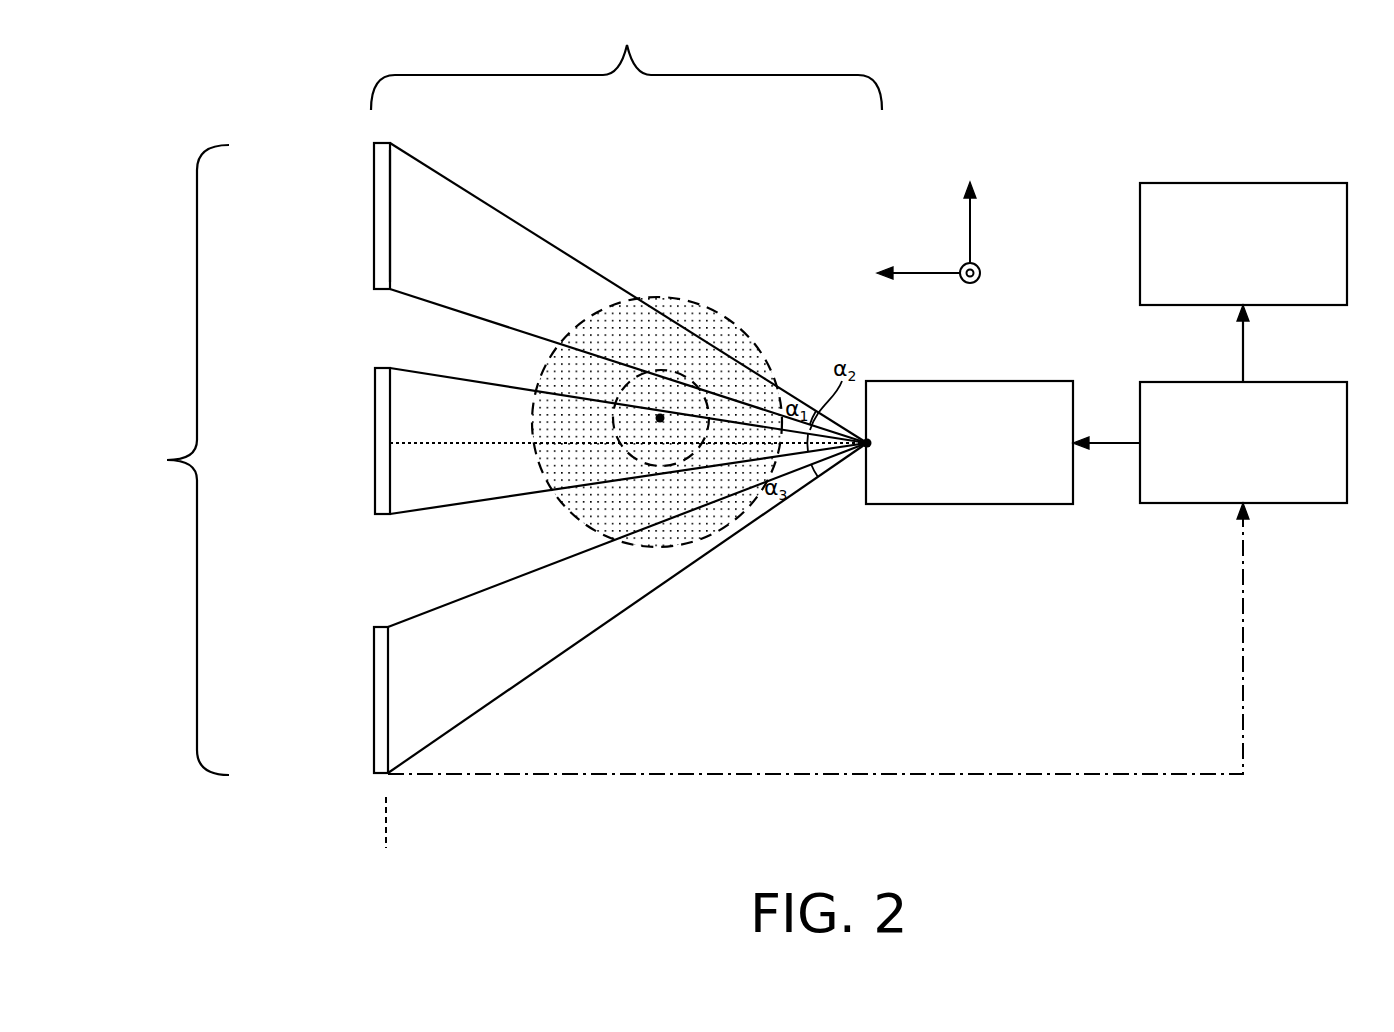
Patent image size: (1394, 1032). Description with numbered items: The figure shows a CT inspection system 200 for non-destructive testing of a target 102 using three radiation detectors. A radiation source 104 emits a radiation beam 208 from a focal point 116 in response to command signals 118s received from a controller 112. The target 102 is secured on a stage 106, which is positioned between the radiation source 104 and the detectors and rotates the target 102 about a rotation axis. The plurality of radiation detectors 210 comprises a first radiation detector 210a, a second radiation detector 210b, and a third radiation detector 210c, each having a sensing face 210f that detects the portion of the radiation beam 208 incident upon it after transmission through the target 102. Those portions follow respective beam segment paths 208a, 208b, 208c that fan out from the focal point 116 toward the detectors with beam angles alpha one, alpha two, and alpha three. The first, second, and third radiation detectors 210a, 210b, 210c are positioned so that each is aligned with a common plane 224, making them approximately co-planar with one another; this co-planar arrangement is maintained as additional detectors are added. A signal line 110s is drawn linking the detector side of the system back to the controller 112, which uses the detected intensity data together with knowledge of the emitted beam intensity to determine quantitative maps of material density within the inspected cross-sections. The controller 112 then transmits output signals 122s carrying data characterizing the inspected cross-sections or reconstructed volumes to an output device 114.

The CT inspection system 200 is at (1098, 160).
The radiation beam 208 is at (626, 63).
The first beam segment path 208a is at (628, 293).
The second beam segment path 208b is at (628, 441).
The third beam segment path 208c is at (627, 608).
The plurality of radiation detectors 210 is at (175, 460).
The first radiation detector 210a is at (374, 216).
The second radiation detector 210b is at (375, 445).
The third radiation detector 210c is at (374, 691).
The sensing face 210f is at (392, 173).
The target 102 is at (561, 506).
The stage 106 is at (615, 404).
The focal point 116 is at (868, 444).
The radiation source 104 is at (969, 442).
The controller 112 is at (1243, 442).
The output device 114 is at (1243, 244).
The command signals 118s is at (1108, 442).
The output signals 122s is at (1244, 336).
The drive signal 110s is at (828, 773).
The common plane 224 is at (386, 816).